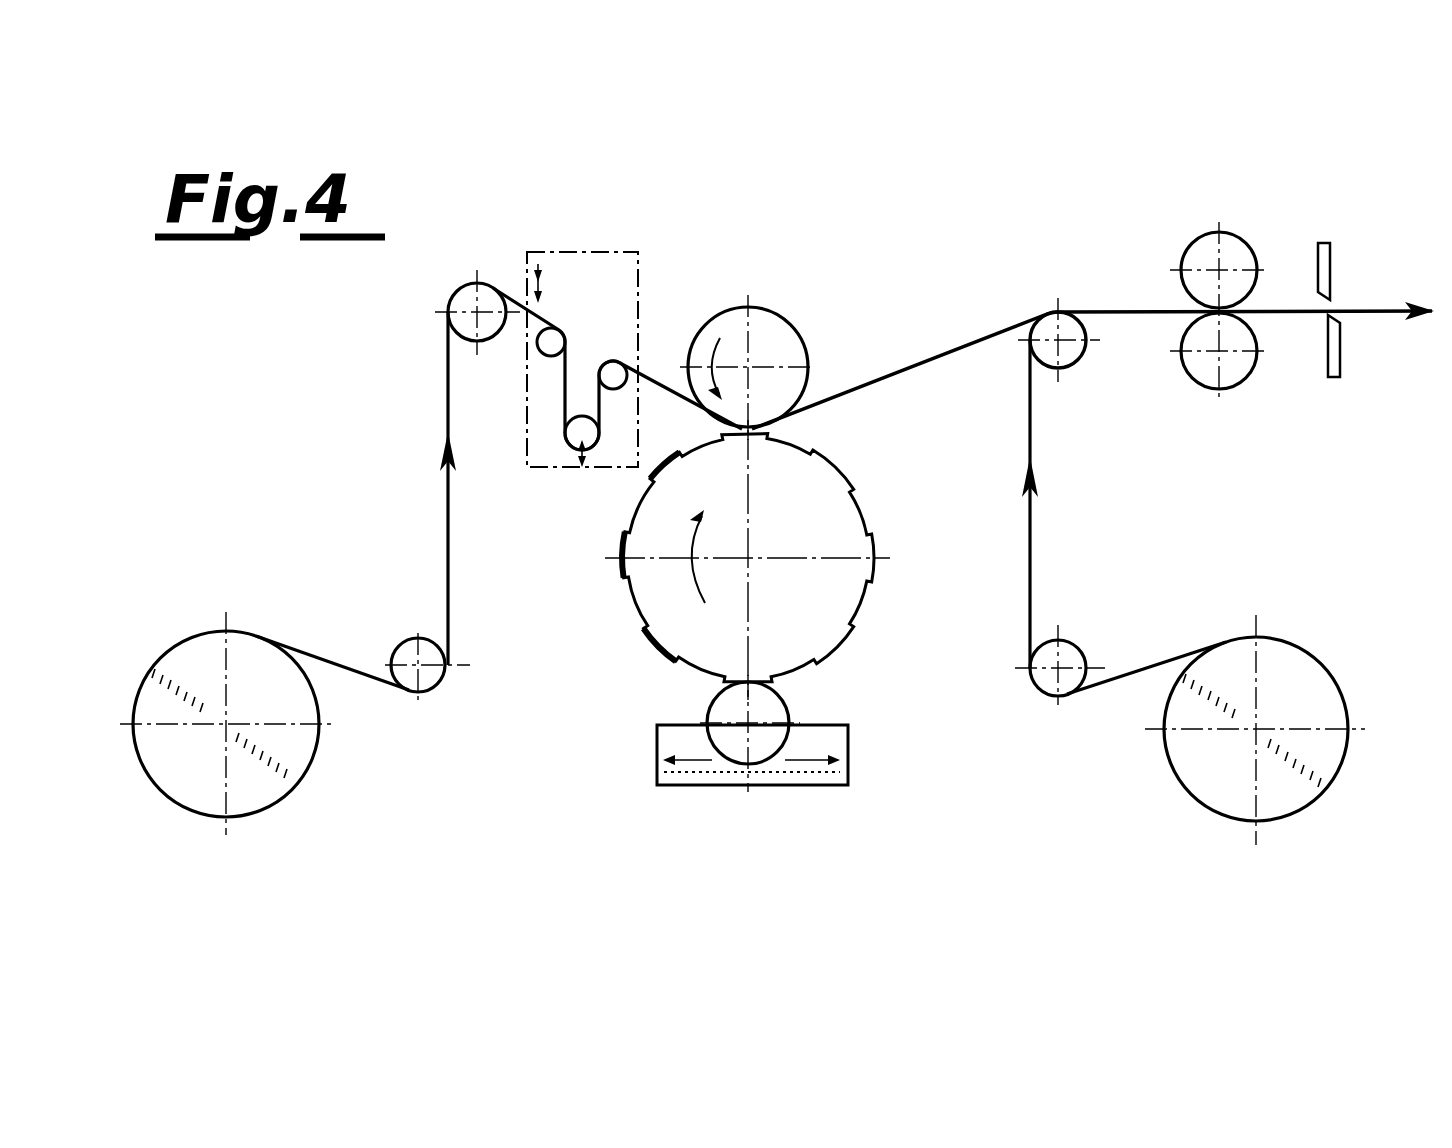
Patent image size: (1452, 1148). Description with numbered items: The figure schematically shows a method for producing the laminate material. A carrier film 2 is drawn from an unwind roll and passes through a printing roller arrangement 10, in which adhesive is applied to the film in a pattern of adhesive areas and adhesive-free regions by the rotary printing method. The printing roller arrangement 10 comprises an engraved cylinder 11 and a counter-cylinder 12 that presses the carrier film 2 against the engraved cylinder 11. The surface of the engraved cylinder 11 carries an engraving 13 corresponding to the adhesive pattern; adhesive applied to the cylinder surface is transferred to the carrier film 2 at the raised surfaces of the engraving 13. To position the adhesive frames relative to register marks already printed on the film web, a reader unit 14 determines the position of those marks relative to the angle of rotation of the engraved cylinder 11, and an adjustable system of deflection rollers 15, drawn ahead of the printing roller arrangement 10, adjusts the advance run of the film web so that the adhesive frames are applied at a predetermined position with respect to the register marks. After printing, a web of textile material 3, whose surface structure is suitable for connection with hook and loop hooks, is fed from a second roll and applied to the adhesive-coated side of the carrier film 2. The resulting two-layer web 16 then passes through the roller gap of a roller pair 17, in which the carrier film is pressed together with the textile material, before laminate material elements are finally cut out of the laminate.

The carrier film 2 is at (448, 552).
The web of textile material 3 is at (1030, 583).
The printing roller arrangement 10 is at (832, 298).
The engraved cylinder 11 is at (848, 598).
The counter-cylinder 12 is at (765, 322).
The engraving 13 is at (618, 580).
The reader unit 14 is at (538, 266).
The adjustable system of deflection rollers 15 is at (536, 478).
The two-layer web 16 is at (1128, 304).
The roller pair 17 is at (1262, 208).